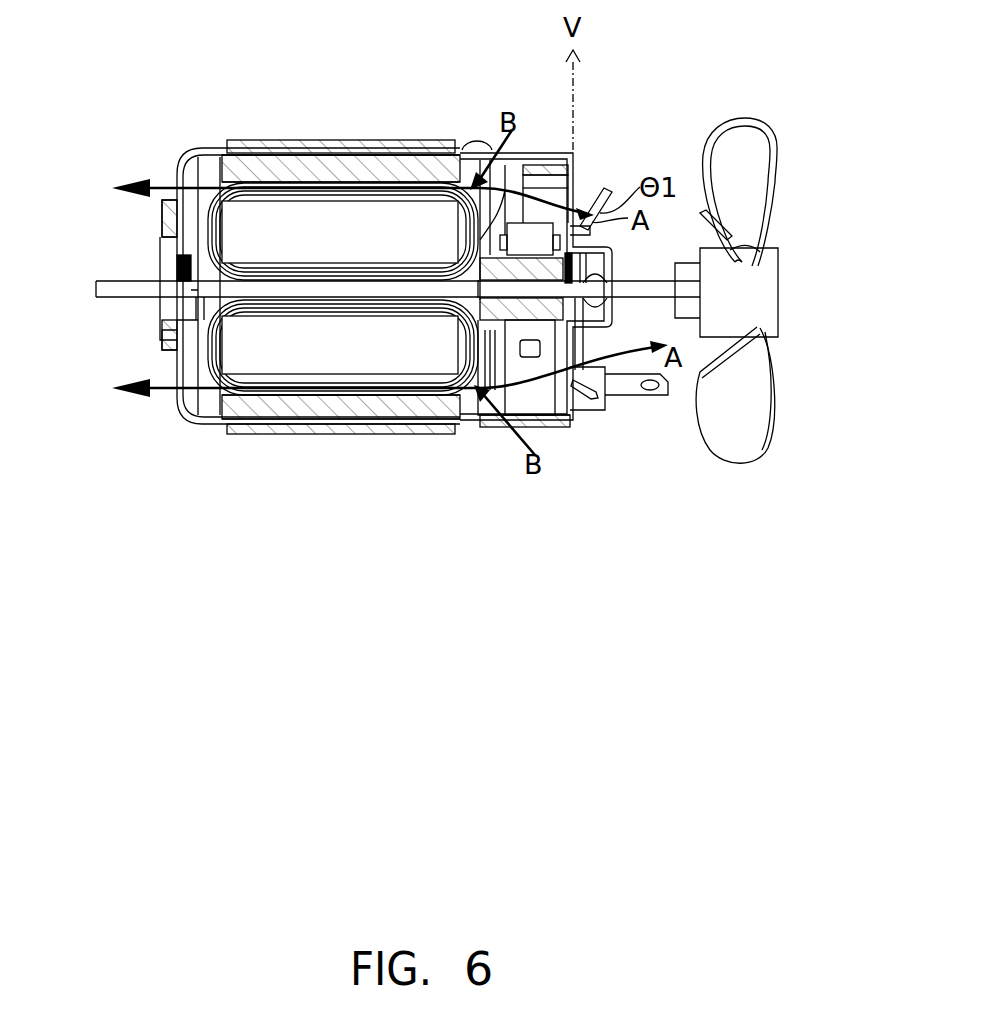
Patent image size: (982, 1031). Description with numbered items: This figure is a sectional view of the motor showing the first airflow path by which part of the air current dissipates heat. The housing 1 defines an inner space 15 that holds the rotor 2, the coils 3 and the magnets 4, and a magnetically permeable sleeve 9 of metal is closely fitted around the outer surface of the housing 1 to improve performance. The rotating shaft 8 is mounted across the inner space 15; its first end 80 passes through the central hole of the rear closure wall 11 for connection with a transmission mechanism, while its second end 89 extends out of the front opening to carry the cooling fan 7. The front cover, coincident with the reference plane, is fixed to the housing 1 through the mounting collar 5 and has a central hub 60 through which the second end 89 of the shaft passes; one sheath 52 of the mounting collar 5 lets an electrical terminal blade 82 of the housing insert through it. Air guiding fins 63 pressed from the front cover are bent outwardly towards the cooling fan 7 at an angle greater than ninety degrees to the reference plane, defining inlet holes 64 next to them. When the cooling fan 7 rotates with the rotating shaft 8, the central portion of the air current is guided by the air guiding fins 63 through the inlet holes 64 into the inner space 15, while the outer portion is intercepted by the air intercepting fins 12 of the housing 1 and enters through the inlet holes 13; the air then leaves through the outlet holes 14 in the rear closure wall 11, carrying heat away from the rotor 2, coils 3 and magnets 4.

The housing 1 is at (482, 428).
The rotor 2 is at (365, 355).
The coils 3 is at (425, 380).
The magnets 4 is at (328, 148).
The mounting collar 5 is at (545, 150).
The cooling fan 7 is at (755, 410).
The rotating shaft 8 is at (205, 298).
The magnetically permeable sleeve 9 is at (310, 434).
The rear closure wall 11 is at (180, 170).
The air intercepting fins 12 is at (478, 140).
The inlet holes 13 is at (530, 150).
The outlet holes 14 is at (178, 200).
The inner space 15 is at (215, 172).
The sheath 52 is at (606, 412).
The central hub 60 is at (612, 256).
The air guiding fins 63 is at (610, 142).
The inlet holes 64 is at (592, 182).
The first end 80 is at (122, 290).
The electrical terminal blade 82 is at (652, 398).
The second end 89 is at (765, 292).